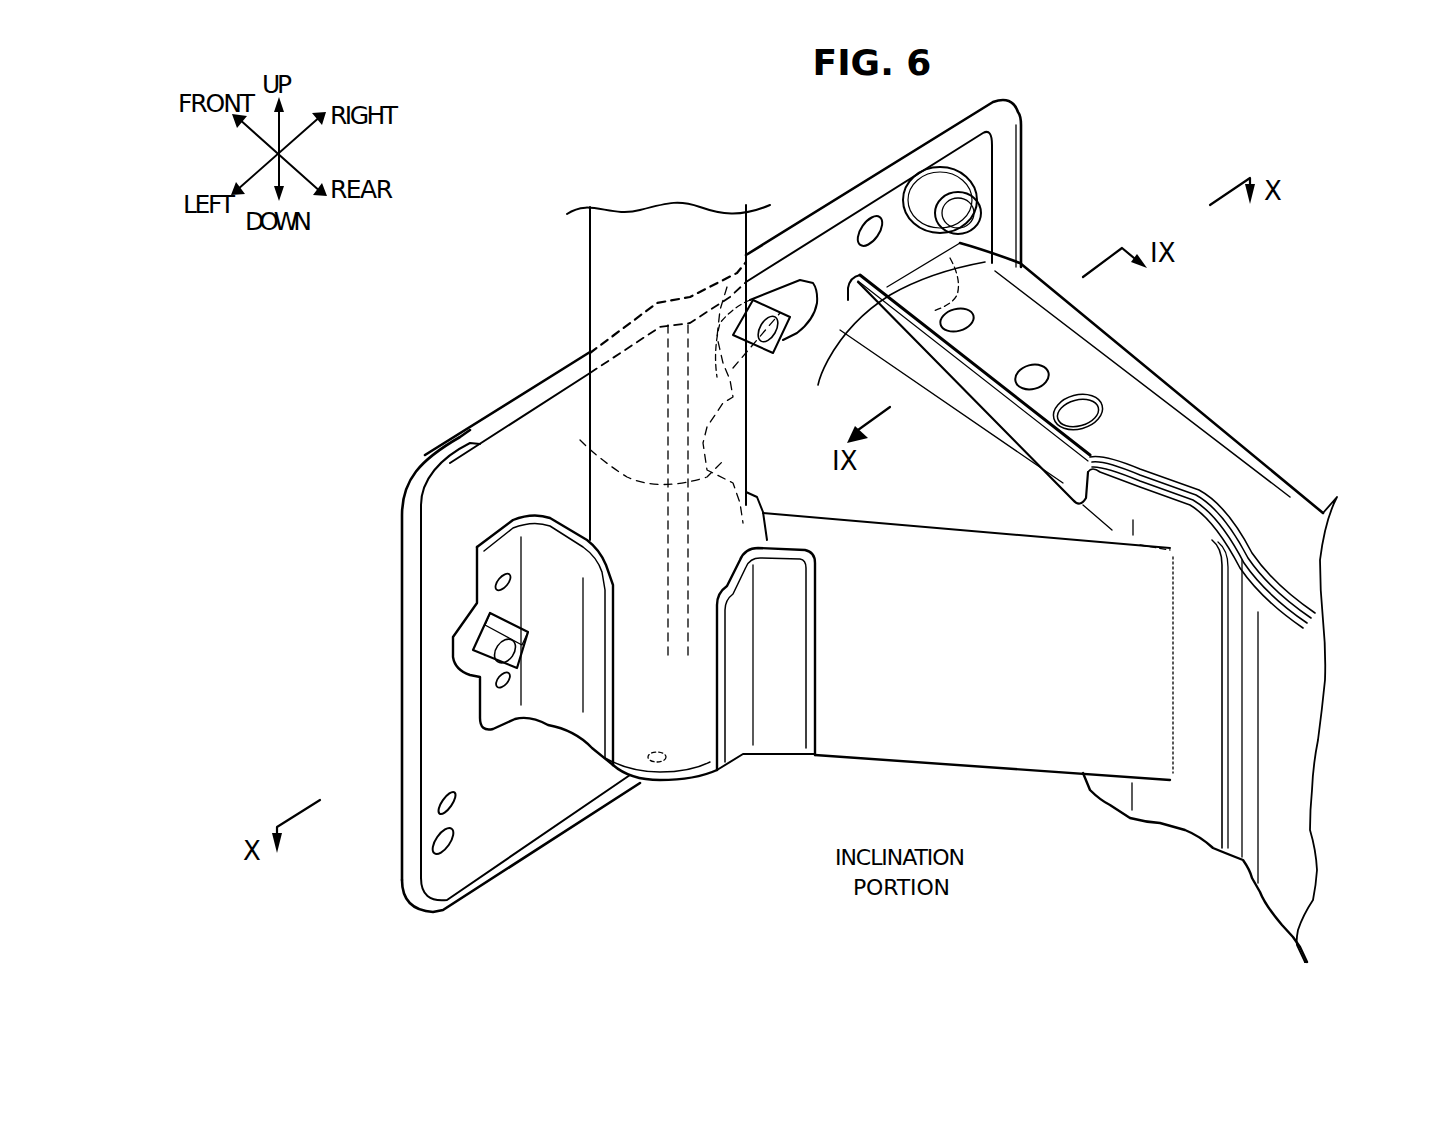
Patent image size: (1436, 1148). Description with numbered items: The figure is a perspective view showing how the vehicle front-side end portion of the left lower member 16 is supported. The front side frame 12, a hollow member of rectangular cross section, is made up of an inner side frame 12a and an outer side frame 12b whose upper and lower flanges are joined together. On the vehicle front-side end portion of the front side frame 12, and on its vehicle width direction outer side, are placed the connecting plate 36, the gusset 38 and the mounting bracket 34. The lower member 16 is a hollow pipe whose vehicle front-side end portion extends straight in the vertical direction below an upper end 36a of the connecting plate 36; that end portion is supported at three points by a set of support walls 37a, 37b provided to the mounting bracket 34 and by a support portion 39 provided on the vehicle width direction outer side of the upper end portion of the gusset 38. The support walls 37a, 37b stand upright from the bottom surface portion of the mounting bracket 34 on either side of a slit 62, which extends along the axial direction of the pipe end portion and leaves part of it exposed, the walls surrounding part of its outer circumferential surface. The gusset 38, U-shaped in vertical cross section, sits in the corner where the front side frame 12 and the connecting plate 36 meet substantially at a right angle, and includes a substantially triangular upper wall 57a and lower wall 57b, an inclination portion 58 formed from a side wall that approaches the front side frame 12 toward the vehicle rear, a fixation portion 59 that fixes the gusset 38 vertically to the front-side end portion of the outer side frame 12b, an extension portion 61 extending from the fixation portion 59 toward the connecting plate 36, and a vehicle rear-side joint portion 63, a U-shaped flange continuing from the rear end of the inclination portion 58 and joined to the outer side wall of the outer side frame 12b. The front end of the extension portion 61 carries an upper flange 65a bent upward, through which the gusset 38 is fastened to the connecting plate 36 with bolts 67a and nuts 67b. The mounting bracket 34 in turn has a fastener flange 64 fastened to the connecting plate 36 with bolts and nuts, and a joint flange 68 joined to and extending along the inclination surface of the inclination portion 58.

The front side frame 12 is at (1178, 363).
The inner side frame 12a is at (1273, 523).
The outer side frame 12b is at (1283, 687).
The lower member 16 is at (587, 488).
The mounting bracket 34 is at (539, 736).
The connecting plate 36 is at (390, 684).
The upper end of connecting plate 36a is at (570, 370).
The support wall 37a is at (742, 677).
The support wall 37b is at (593, 740).
The gusset 38 is at (1040, 855).
The support portion 39 is at (580, 440).
The upper wall 57a is at (1007, 270).
The lower wall 57b is at (1020, 776).
The inclination portion 58 is at (917, 670).
The fixation portion 59 is at (953, 428).
The extension portion 61 is at (820, 365).
The slit 62 is at (720, 688).
The vehicle rear-side joint portion 63 is at (1207, 650).
The fastener flange 64 is at (462, 652).
The upper flange 65a is at (783, 260).
The bolt 67a is at (827, 280).
The nut 67b is at (745, 288).
The joint flange 68 is at (793, 650).